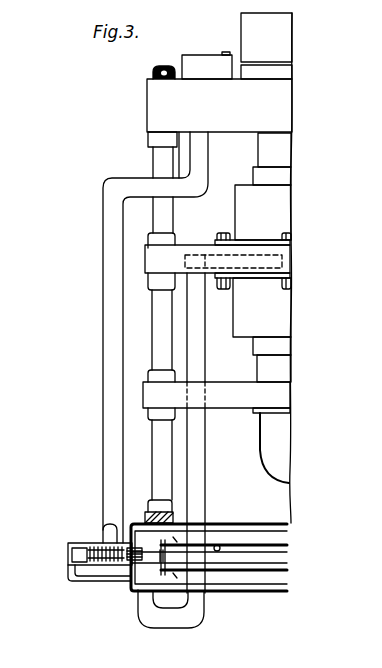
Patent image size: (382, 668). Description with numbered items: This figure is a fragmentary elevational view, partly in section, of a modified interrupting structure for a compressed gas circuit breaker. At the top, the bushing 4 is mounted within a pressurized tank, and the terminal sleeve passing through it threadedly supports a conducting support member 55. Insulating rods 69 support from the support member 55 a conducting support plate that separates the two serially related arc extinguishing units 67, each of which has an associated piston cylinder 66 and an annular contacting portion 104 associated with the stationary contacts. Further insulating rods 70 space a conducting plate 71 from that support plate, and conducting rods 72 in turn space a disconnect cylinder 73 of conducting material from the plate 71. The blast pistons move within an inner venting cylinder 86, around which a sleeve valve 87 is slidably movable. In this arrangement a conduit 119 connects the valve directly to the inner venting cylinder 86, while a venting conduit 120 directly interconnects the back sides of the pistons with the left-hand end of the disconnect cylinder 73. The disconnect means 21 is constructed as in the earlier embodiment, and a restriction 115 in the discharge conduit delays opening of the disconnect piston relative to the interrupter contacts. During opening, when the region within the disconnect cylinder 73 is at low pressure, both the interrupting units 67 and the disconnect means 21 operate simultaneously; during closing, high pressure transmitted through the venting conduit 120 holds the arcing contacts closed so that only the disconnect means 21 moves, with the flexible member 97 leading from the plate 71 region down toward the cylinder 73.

The bushing 4 is at (286, 30).
The conducting support member 55 is at (290, 90).
The annular contacting portion 104 is at (285, 154).
The insulating rods 69 is at (160, 162).
The conduit 119 is at (105, 268).
The piston cylinders 66 is at (283, 211).
The arc extinguishing units 67 is at (224, 231).
The insulating rods 70 is at (157, 342).
The conducting plate 71 is at (285, 396).
The conducting rods 72 is at (157, 466).
The venting conduit 120 is at (207, 455).
The flexible hose 97 is at (268, 469).
The disconnect cylinder 73 is at (253, 522).
The inner venting cylinder 86 is at (216, 540).
The sleeve valve 87 is at (221, 578).
The disconnect means 21 is at (268, 615).
The restriction 115 is at (103, 532).